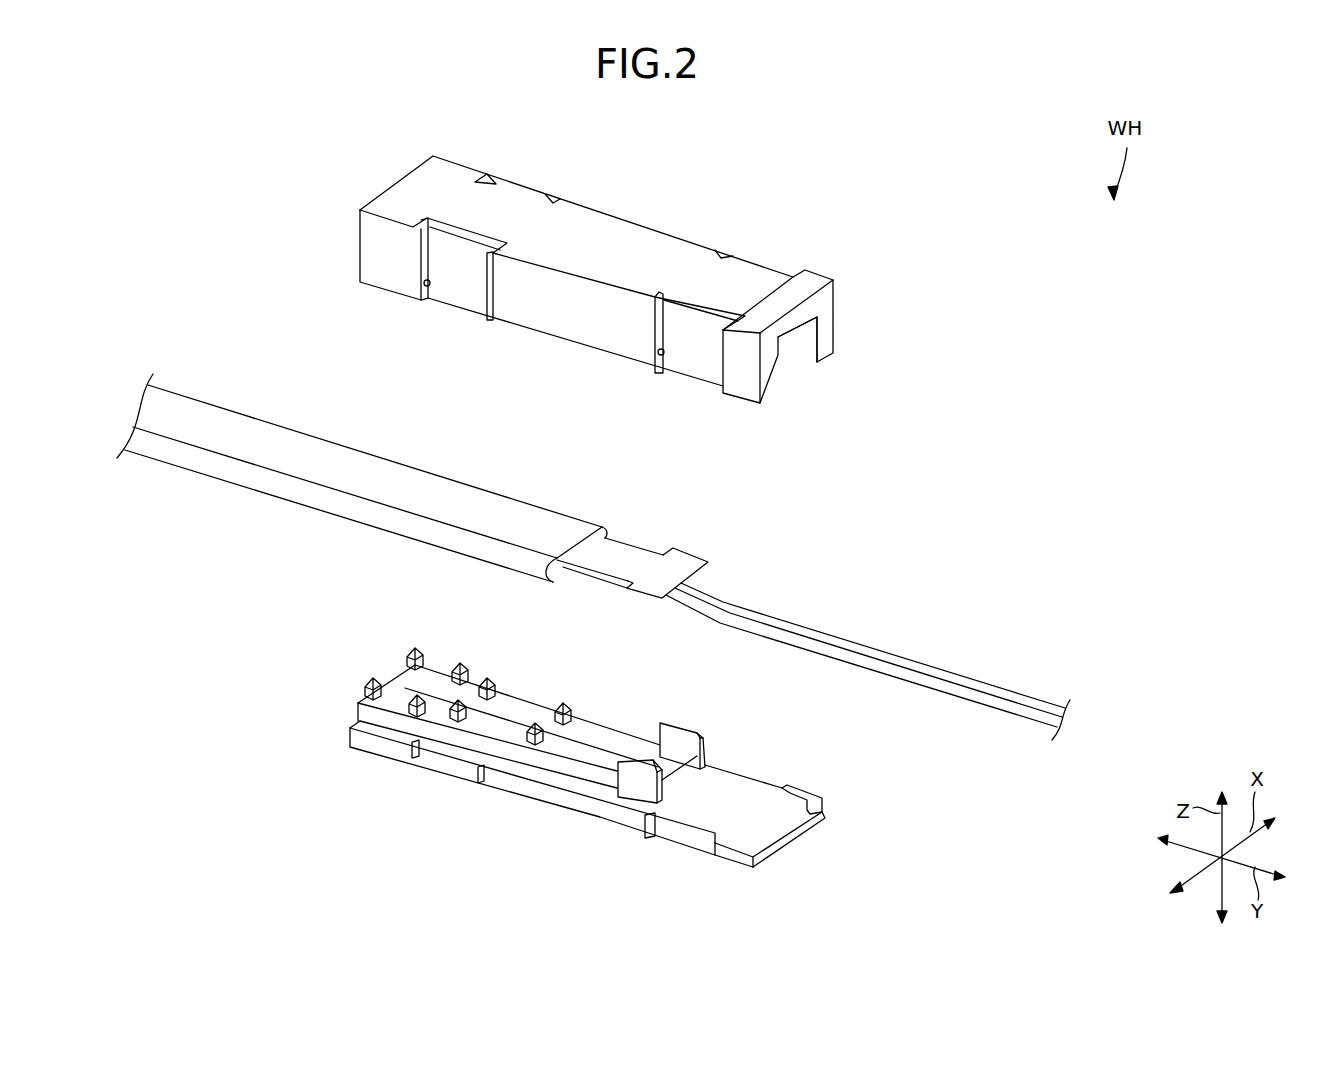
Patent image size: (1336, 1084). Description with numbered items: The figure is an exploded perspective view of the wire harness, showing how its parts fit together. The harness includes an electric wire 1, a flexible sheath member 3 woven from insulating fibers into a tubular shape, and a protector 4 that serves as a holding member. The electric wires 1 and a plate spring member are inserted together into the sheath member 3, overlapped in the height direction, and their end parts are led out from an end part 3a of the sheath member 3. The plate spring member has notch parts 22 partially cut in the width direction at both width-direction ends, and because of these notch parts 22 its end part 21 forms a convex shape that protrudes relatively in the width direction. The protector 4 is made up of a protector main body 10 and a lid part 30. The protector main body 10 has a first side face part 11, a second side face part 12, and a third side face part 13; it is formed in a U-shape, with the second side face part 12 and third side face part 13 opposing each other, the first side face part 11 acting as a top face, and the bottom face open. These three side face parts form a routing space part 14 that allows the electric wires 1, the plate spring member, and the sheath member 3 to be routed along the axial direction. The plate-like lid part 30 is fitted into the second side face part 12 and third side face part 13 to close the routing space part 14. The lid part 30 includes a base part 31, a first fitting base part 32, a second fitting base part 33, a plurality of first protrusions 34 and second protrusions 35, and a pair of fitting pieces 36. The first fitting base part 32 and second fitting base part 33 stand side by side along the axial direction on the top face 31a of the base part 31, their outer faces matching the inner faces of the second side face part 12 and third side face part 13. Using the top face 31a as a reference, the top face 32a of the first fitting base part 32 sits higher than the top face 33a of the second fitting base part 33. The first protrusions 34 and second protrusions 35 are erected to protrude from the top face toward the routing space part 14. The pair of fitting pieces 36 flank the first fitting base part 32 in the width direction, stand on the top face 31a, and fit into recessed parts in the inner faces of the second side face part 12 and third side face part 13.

The electric wire 1 is at (918, 670).
The sheath member 3 is at (167, 405).
The end part of the sheath member 3a is at (535, 513).
The protector 4 is at (185, 572).
The protector main body 10 is at (373, 263).
The first side face part 11 is at (623, 232).
The second side face part 12 is at (577, 320).
The third side face part 13 is at (836, 309).
The routing space part 14 is at (797, 347).
The end part of the plate spring member 21 is at (677, 568).
The notch part 22 is at (630, 542).
The lid part 30 is at (345, 740).
The base part 31 is at (570, 800).
The top face of the base part 31a is at (685, 818).
The first fitting base part 32 is at (600, 750).
The top face of the first fitting base part 32a is at (560, 742).
The second fitting base part 33 is at (736, 800).
The top face of the second fitting base part 33a is at (767, 808).
The first protrusion 34 is at (415, 675).
The second protrusion 35 is at (458, 724).
The fitting piece 36 is at (633, 787).